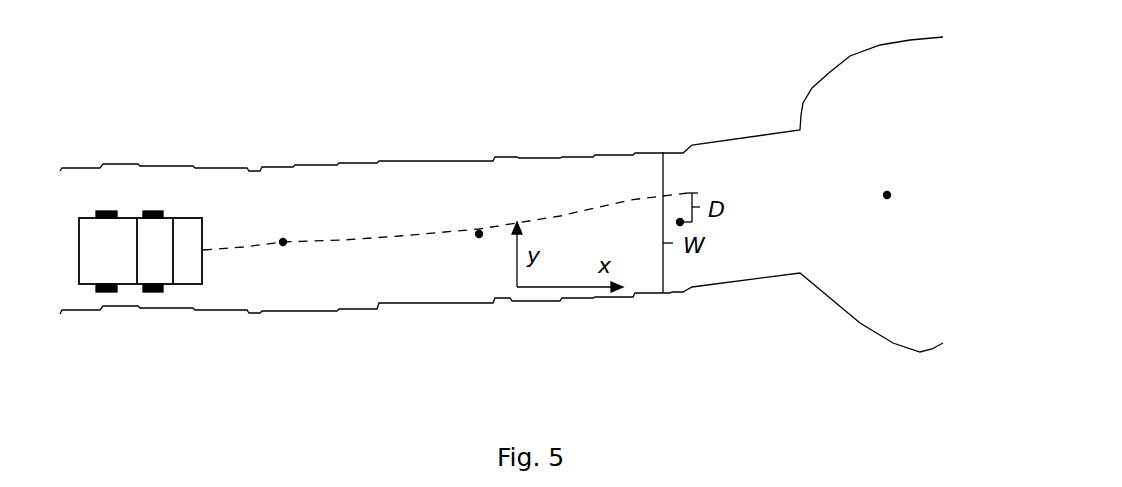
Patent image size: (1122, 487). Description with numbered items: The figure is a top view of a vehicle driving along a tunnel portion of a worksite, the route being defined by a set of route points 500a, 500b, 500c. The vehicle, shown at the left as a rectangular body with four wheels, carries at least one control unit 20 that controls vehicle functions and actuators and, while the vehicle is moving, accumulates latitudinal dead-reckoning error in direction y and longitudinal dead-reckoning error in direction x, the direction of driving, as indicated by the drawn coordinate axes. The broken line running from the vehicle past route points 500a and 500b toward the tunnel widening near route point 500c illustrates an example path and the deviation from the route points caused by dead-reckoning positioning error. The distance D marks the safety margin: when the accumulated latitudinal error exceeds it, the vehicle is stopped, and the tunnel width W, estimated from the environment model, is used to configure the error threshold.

The control unit 20 is at (130, 262).
The route point 500a is at (283, 240).
The route point 500b is at (479, 232).
The route point 500c is at (888, 198).